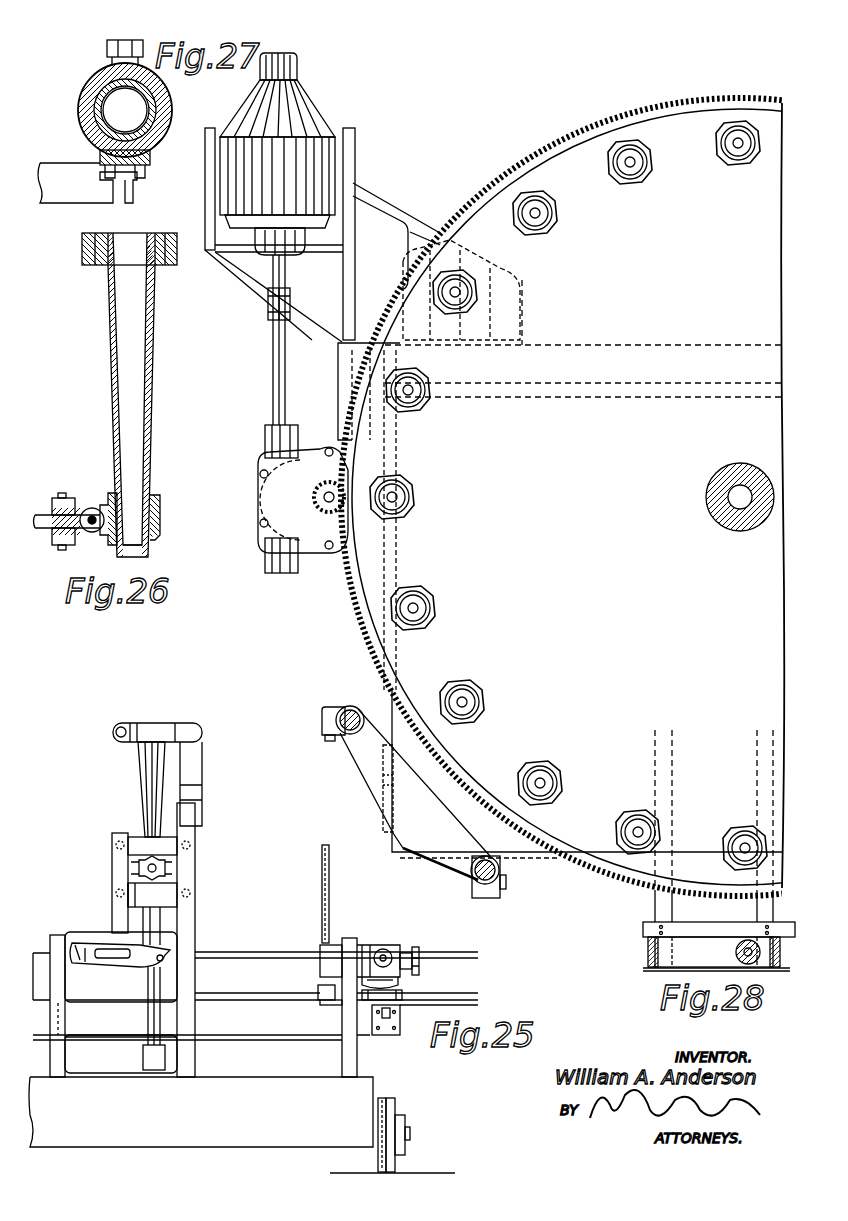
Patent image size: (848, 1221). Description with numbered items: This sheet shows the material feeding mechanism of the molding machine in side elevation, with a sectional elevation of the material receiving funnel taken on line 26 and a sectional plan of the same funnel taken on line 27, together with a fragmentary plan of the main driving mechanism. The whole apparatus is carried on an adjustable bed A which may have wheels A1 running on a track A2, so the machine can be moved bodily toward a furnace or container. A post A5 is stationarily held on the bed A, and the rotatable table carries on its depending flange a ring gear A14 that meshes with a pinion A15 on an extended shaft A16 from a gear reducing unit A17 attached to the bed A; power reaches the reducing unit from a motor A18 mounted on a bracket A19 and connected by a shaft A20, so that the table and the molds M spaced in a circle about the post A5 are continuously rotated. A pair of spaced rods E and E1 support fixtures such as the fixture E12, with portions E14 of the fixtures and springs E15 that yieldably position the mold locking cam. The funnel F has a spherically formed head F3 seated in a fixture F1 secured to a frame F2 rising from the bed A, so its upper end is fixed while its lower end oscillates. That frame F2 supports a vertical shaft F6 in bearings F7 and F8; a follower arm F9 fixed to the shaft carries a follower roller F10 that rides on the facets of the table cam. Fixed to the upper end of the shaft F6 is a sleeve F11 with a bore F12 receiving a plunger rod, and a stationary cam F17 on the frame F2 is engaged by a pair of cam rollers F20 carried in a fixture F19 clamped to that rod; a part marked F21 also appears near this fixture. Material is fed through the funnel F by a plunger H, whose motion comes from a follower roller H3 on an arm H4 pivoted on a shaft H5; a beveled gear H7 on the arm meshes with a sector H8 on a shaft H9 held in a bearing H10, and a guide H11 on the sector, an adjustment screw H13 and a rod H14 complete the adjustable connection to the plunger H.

In FIG. 27, the funnel F is at (95, 102).
In FIG. 26, the funnel F is at (108, 338).
In FIG. 25, the funnel F is at (140, 785).
In FIG. 27, the fixture F1 is at (97, 118).
In FIG. 26, the fixture F1 is at (104, 262).
In FIG. 25, the fixture F1 is at (168, 727).
In FIG. 27, the frame F2 is at (90, 190).
In FIG. 27, the spherically formed head F3 is at (100, 128).
In FIG. 26, the spherically formed head F3 is at (90, 242).
In FIG. 25, the vertical shaft F6 is at (148, 985).
In FIG. 25, the bearing F7 is at (143, 1057).
In FIG. 25, the bearing F8 is at (150, 920).
In FIG. 25, the follower arm F9 is at (110, 960).
In FIG. 25, the follower roller F10 is at (62, 948).
In FIG. 25, the sleeve F11 is at (172, 866).
In FIG. 25, the bore F12 is at (186, 873).
In FIG. 25, the stationary cam F17 is at (150, 845).
In FIG. 26, the fixture F19 is at (52, 535).
In FIG. 26, the cam rollers F20 is at (58, 508).
In FIG. 26, the pivot boss F21 is at (92, 508).
In FIG. 25, the bed A is at (222, 1114).
In FIG. 28, the bed A is at (392, 690).
In FIG. 25, the wheels A1 is at (392, 1098).
In FIG. 25, the track A2 is at (400, 1172).
In FIG. 28, the post A5 is at (718, 511).
In FIG. 28, the ring gear A14 is at (578, 542).
In FIG. 28, the pinion A15 is at (352, 505).
In FIG. 28, the extended shaft A16 is at (324, 500).
In FIG. 28, the gear reducing unit A17 is at (282, 478).
In FIG. 28, the motor A18 is at (307, 163).
In FIG. 28, the bracket A19 is at (378, 222).
In FIG. 28, the shaft A20 is at (278, 384).
In FIG. 28, the molds M is at (735, 150).
In FIG. 28, the rod E is at (503, 868).
In FIG. 28, the rod E1 is at (335, 710).
In FIG. 28, the fixture E12 is at (383, 780).
In FIG. 25, the portions of the brackets E14 is at (260, 952).
In FIG. 25, the springs E15 is at (290, 978).
In FIG. 28, the plunger H is at (735, 953).
In FIG. 25, the follower roller H3 is at (322, 998).
In FIG. 25, the arm H4 is at (362, 1000).
In FIG. 25, the shaft H5 is at (386, 1035).
In FIG. 25, the beveled gear H7 is at (402, 995).
In FIG. 25, the sector H8 is at (398, 983).
In FIG. 25, the shaft H9 is at (384, 950).
In FIG. 25, the bearing H10 is at (395, 955).
In FIG. 25, the guide H11 is at (368, 945).
In FIG. 25, the adjustment screw H13 is at (418, 948).
In FIG. 25, the rod H14 is at (330, 871).
In FIG. 25, the section line 26- 26 is at (104, 697).
In FIG. 25, the section line 27- 27 is at (222, 745).